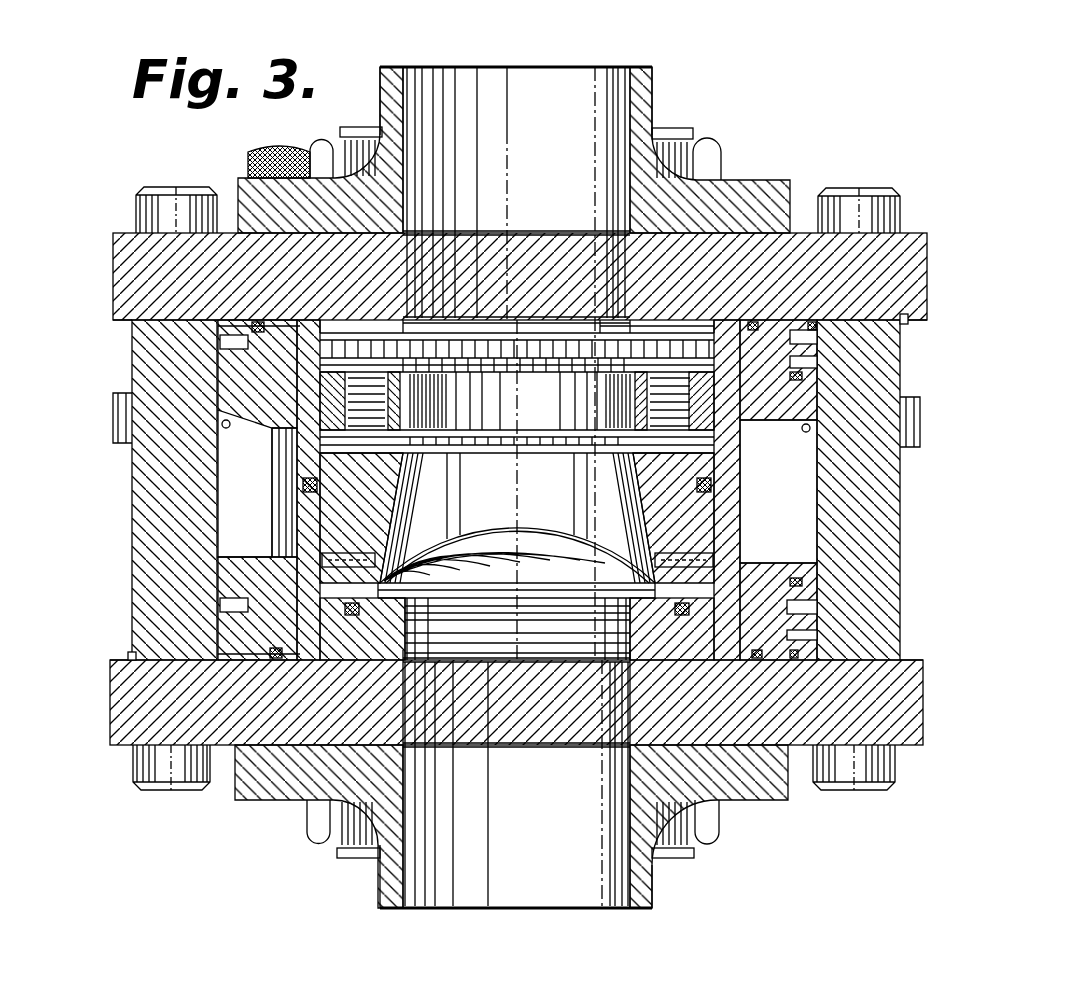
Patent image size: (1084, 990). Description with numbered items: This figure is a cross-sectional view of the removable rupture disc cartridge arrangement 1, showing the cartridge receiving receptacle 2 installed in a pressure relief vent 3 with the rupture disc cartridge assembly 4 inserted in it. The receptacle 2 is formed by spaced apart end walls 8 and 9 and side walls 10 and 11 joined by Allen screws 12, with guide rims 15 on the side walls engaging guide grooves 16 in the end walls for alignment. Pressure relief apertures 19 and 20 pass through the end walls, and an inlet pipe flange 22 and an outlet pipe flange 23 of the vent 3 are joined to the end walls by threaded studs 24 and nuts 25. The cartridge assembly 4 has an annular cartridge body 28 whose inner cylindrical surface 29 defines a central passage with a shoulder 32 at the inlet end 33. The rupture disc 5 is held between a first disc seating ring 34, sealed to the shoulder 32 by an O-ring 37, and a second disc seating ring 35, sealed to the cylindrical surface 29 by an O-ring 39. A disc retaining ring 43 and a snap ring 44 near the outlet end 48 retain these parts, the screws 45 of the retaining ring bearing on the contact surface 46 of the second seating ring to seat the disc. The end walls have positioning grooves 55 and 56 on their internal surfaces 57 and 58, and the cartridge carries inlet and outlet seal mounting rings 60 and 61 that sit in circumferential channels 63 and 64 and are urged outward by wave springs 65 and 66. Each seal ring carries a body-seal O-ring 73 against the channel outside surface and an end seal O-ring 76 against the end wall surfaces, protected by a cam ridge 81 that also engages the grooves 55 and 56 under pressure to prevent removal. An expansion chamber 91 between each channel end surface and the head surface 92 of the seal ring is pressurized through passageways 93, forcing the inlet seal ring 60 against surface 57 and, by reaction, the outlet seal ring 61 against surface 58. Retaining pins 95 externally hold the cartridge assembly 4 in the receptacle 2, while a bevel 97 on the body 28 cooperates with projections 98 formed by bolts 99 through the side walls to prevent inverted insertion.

The removable rupture disc cartridge arrangement 1 is at (766, 148).
The cartridge receiving receptacle 2 is at (106, 222).
The pressure relief vent 3 is at (578, 92).
The rupture disc cartridge assembly 4 is at (288, 487).
The rupture disc 5 is at (538, 535).
The end wall 8 is at (113, 710).
The end wall 9 is at (113, 262).
The side wall 10 is at (145, 552).
The side wall 11 is at (888, 590).
The Allen screws 12 is at (200, 187).
The guide rims 15 is at (135, 318).
The guide grooves 16 is at (922, 325).
The pressure relief aperture 19 is at (516, 784).
The pressure relief aperture 20 is at (516, 192).
The inlet pipe flange 22 is at (652, 890).
The outlet pipe flange 23 is at (655, 97).
The threaded studs 24 is at (365, 126).
The nuts 25 is at (325, 142).
The rupture disc cartridge body 28 is at (300, 515).
The inner cylindrical surface 29 is at (705, 515).
The shoulder 32 is at (378, 575).
The inlet end 33 is at (680, 658).
The first disc seating ring 34 is at (525, 610).
The second disc seating ring 35 is at (446, 468).
The O-ring 37 is at (635, 593).
The O-ring 39 is at (700, 485).
The disc retaining ring 43 is at (525, 420).
The snap ring 44 is at (555, 360).
The screws 45 is at (375, 428).
The contact surface 46 is at (572, 450).
The outlet end 48 is at (495, 320).
The positioning groove 55 is at (808, 645).
The positioning groove 56 is at (805, 345).
The internal surface 57 is at (378, 658).
The internal surface 58 is at (615, 335).
The inlet seal mounting ring 60 is at (805, 632).
The outlet seal mounting ring 61 is at (790, 365).
The circumferential channel 63 is at (757, 340).
The circumferential channel 64 is at (780, 615).
The wave spring 65 is at (772, 640).
The wave spring 66 is at (757, 382).
The O-ring 73 is at (798, 372).
The end seal O-ring 76 is at (752, 330).
The cam ridge 81 is at (812, 330).
The expansion chamber 91 is at (250, 378).
The head surface 92 is at (272, 372).
The passageways 93 is at (290, 320).
The retaining pins 95 is at (272, 150).
The bevel 97 is at (800, 420).
The projections 98 is at (226, 425).
The bolts 99 is at (112, 420).